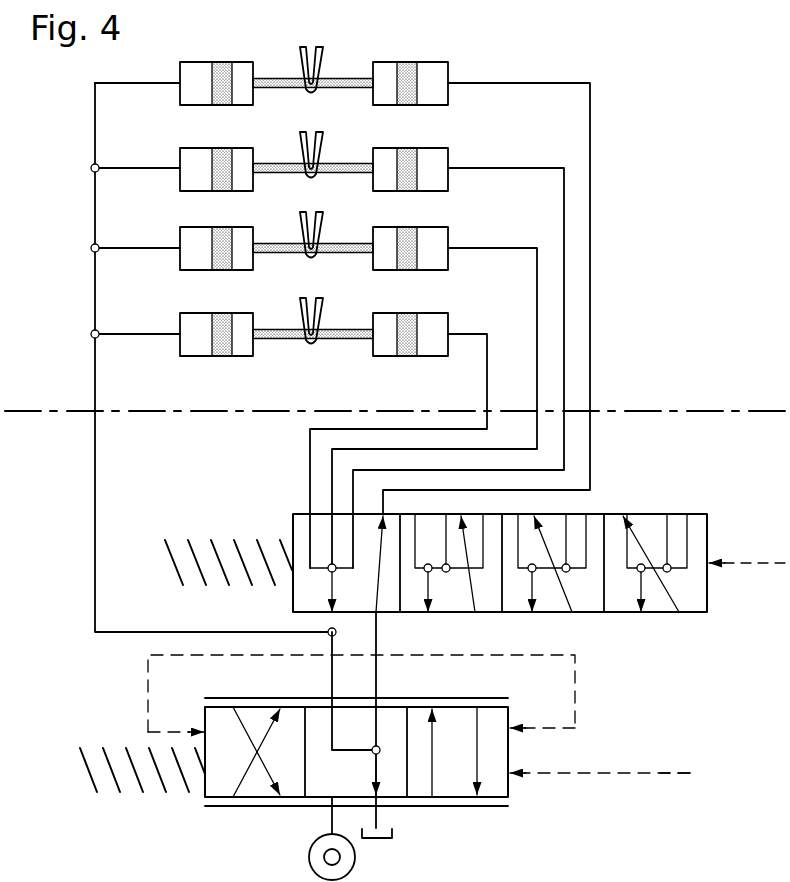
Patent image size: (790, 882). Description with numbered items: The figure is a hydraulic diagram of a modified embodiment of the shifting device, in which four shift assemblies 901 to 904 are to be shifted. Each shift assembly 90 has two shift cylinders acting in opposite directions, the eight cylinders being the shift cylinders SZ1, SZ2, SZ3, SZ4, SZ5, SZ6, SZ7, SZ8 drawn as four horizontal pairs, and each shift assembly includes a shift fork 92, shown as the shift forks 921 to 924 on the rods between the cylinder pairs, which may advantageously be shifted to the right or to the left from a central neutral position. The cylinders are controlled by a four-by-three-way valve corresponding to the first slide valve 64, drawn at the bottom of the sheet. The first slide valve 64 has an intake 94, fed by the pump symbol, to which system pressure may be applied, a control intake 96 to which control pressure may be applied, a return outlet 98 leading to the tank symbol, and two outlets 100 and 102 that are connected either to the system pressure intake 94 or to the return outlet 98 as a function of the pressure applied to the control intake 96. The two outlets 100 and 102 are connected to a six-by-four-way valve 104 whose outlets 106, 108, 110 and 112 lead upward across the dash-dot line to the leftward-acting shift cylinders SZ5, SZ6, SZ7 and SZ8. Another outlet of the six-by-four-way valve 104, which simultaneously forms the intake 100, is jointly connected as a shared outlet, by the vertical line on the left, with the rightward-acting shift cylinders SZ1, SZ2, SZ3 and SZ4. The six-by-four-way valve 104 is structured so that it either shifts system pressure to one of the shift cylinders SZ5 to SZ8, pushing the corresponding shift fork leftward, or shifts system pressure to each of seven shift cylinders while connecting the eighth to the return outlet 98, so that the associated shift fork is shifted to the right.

The shift cylinder SZ1 is at (185, 346).
The shift cylinder SZ2 is at (185, 260).
The shift cylinder SZ3 is at (185, 180).
The shift cylinder SZ4 is at (185, 95).
The shift cylinder SZ5 is at (432, 353).
The shift cylinder SZ6 is at (443, 260).
The shift cylinder SZ7 is at (443, 180).
The shift cylinder SZ8 is at (443, 95).
The shift assembly 90 is at (325, 211).
The shift assembly 901 is at (344, 63).
The shift assembly 904 is at (292, 342).
The shift fork 92 is at (312, 183).
The shift fork 921 is at (298, 62).
The shift fork 924 is at (322, 308).
The first slide valve 64 is at (493, 777).
The intake 94 is at (309, 857).
The control intake 96 is at (606, 775).
The return outlet 98 is at (379, 818).
The outlet 100 is at (332, 677).
The outlet 102 is at (378, 630).
The 6-by-4-way valve 104 is at (690, 500).
The outlet 106 is at (310, 498).
The outlet 108 is at (332, 460).
The outlet 110 is at (567, 464).
The outlet 112 is at (593, 432).